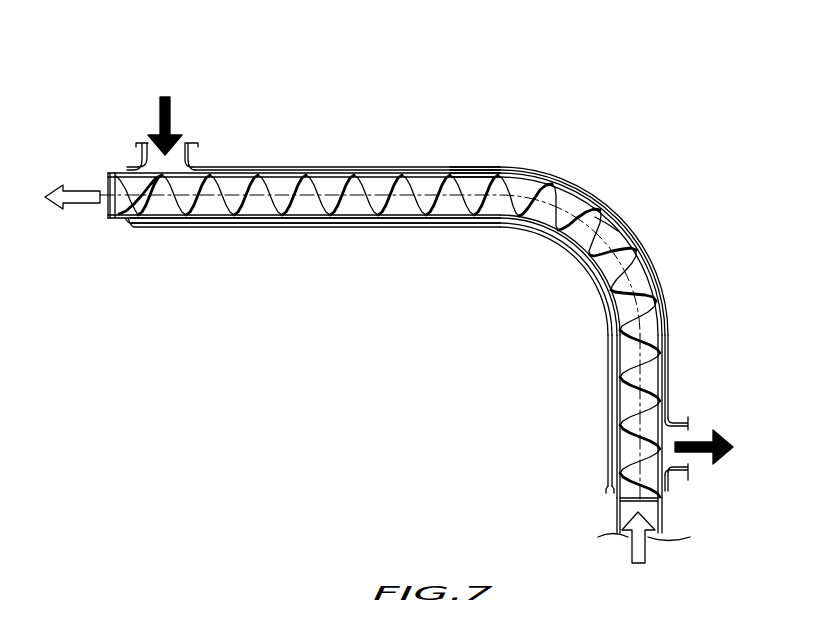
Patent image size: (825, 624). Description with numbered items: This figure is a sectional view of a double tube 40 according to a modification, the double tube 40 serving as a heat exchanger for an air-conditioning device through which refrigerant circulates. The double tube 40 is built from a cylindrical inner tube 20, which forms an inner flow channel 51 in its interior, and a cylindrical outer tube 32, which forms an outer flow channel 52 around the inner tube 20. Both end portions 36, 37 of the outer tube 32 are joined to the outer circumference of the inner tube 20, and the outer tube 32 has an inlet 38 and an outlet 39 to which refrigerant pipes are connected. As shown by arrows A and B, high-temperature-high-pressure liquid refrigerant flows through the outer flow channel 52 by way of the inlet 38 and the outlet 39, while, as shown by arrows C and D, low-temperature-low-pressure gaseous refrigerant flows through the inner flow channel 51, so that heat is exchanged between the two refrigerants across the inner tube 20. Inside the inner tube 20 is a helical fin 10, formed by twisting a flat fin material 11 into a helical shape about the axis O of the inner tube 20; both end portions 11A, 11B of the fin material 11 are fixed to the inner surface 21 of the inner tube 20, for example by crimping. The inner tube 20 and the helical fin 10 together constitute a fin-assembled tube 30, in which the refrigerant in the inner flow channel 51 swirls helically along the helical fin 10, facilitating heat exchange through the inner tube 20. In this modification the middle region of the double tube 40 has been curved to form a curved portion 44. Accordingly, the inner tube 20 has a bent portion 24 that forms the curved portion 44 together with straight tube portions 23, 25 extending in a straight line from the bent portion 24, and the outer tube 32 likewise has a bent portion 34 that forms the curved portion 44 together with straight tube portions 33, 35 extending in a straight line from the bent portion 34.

The helical fin 10 is at (431, 306).
The fin material 11 is at (437, 306).
The end portion of the fin material 11A is at (647, 505).
The end portion of the fin material 11B is at (112, 220).
The inner tube 20 is at (437, 306).
The inner surface of the inner tube 21 is at (290, 175).
The straight tube portion of the inner tube 23 is at (475, 175).
The bent portion of the inner tube 24 is at (628, 242).
The straight tube portion of the inner tube 25 is at (660, 352).
The fin-assembled tube 30 is at (425, 292).
The outer tube 32 is at (353, 167).
The straight tube portion of the outer tube 33 is at (487, 162).
The bent portion of the outer tube 34 is at (625, 223).
The straight tube portion of the outer tube 35 is at (670, 335).
The end portion of the outer tube 36 is at (667, 490).
The end portion of the outer tube 37 is at (122, 170).
The inlet 38 is at (188, 160).
The outlet 39 is at (688, 417).
The double tube 40 is at (607, 203).
The curved portion 44 is at (744, 200).
The inner flow channel 51 is at (238, 212).
The outer flow channel 52 is at (207, 225).
The axis O is at (85, 195).
The arrow A is at (160, 132).
The arrow B is at (707, 432).
The arrow C is at (647, 555).
The arrow D is at (67, 207).